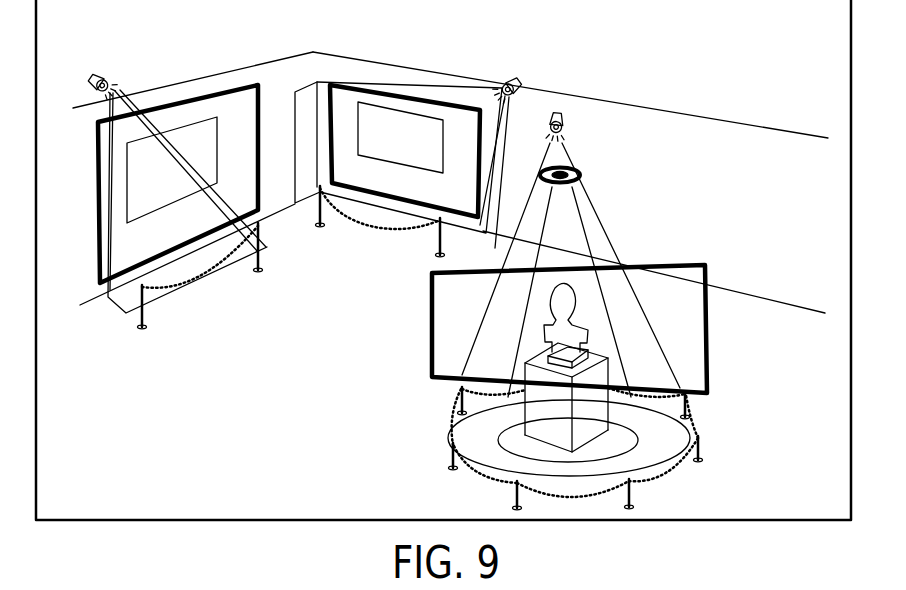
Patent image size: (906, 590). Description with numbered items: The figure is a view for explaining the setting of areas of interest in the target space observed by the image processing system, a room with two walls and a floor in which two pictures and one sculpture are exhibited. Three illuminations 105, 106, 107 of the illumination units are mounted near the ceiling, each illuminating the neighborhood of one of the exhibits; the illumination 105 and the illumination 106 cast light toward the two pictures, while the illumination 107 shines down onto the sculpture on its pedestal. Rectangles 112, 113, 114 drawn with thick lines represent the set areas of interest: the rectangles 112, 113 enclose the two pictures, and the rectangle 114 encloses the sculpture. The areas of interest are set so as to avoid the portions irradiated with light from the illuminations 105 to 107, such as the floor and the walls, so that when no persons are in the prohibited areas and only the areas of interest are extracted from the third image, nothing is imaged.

The illumination 105 is at (88, 72).
The illumination 106 is at (520, 82).
The illumination 107 is at (558, 112).
The rectangle 112 is at (213, 95).
The rectangle 113 is at (348, 89).
The rectangle 114 is at (708, 348).